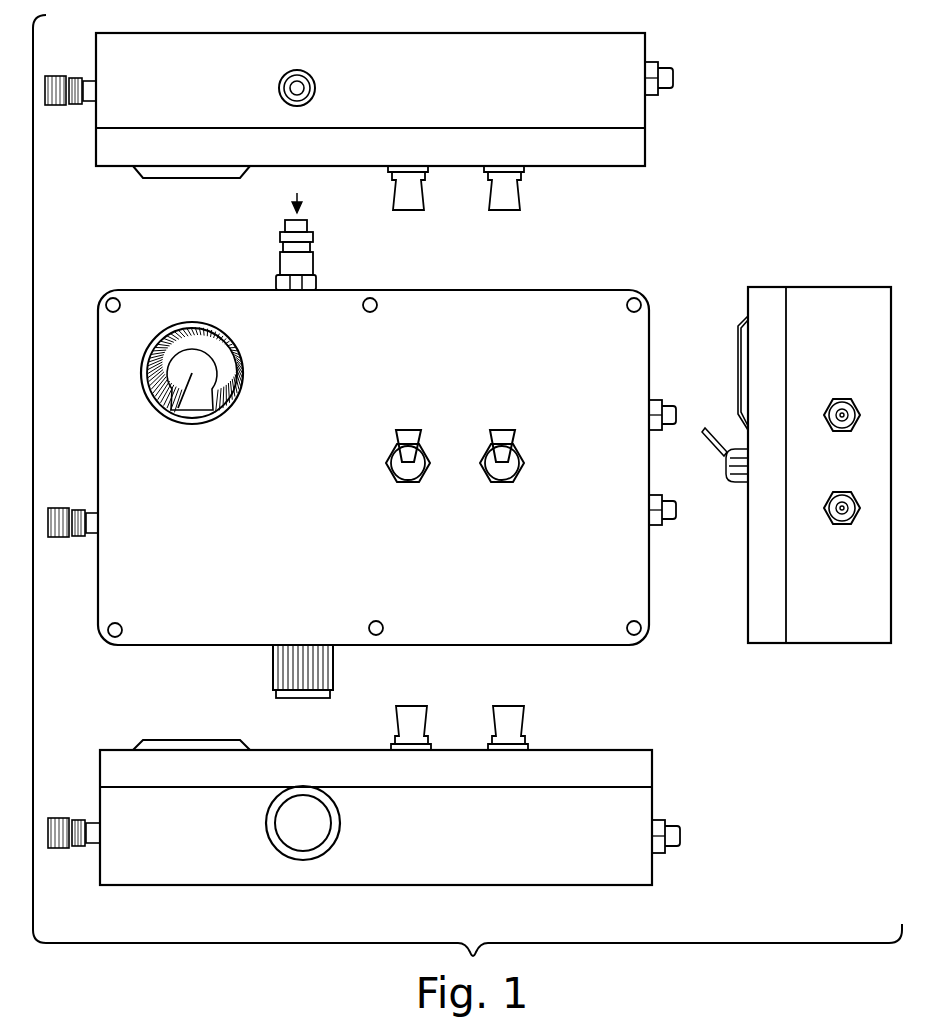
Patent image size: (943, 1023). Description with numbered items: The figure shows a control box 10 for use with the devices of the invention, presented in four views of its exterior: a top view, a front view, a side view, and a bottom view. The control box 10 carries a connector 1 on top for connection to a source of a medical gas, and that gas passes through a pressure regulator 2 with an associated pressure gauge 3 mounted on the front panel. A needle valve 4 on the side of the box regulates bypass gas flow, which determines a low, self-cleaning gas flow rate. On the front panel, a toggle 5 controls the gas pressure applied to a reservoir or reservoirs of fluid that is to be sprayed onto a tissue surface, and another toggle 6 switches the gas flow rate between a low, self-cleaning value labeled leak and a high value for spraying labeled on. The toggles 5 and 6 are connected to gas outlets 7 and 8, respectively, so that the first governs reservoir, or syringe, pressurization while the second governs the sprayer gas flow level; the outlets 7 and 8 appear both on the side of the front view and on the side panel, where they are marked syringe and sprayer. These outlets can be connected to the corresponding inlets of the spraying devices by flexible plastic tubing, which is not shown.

The connector 1 is at (278, 267).
The pressure regulator 2 is at (272, 672).
The pressure gauge 3 is at (192, 425).
The needle valve 4 is at (56, 508).
The toggle 5 is at (490, 454).
The toggle 6 is at (426, 476).
The gas outlet 7 is at (668, 403).
The gas outlet 8 is at (662, 527).
The control box 10 is at (627, 188).